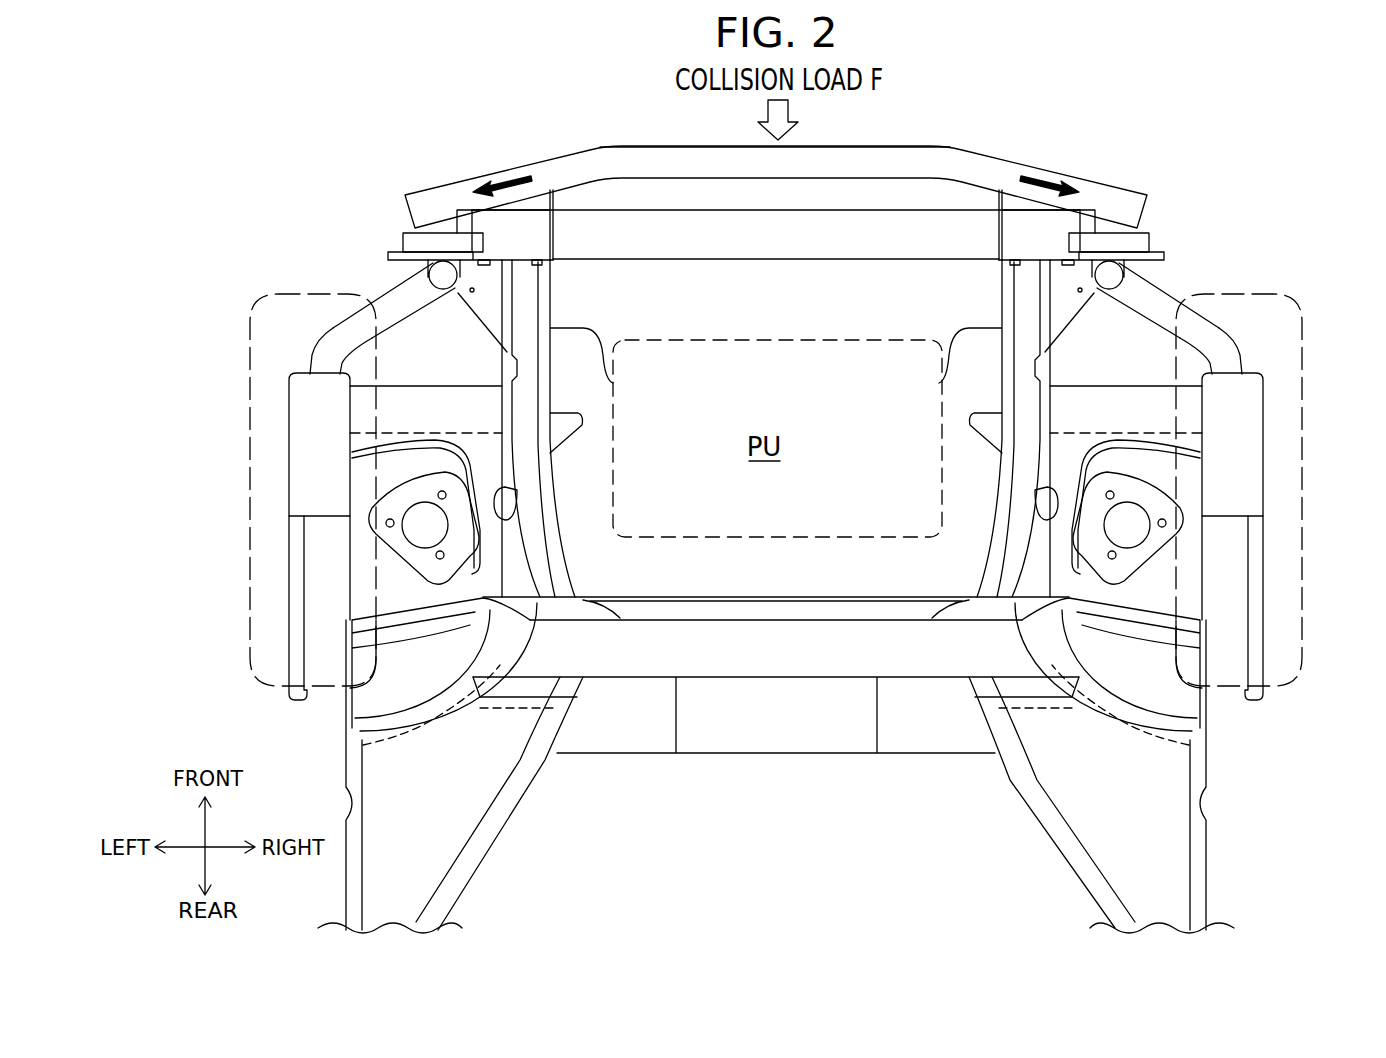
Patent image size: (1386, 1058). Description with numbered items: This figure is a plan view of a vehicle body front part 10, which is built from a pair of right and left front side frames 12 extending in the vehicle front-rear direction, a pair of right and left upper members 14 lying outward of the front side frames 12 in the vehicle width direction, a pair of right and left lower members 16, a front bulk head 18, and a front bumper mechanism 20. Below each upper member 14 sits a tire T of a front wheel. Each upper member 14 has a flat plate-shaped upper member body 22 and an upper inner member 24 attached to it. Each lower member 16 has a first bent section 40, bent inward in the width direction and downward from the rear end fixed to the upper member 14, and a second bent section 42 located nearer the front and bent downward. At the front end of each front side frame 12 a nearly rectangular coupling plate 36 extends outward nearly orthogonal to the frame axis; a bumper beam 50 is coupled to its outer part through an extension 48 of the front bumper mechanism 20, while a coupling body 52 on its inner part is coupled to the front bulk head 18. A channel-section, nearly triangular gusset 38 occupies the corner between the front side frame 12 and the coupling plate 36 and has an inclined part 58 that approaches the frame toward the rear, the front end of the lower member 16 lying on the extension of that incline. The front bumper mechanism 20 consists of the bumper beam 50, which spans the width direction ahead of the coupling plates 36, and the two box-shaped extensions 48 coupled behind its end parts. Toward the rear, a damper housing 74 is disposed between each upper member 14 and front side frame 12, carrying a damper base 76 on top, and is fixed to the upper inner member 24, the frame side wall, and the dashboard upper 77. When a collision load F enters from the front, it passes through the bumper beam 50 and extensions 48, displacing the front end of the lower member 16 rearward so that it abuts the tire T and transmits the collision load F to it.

The vehicle body front part 10 is at (1252, 180).
The front side frame 12 is at (556, 302).
The upper member 14 is at (778, 653).
The lower member 16 is at (778, 310).
The front bulk head 18 is at (800, 205).
The front bumper mechanism 20 is at (776, 143).
The upper member body 22 is at (286, 618).
The upper inner member 24 is at (289, 438).
The coupling plate 36 is at (390, 255).
The gusset 38 is at (468, 322).
The first bent section 40 is at (326, 350).
The second bent section 42 is at (440, 268).
The extension 48 is at (395, 238).
The bumper beam 50 is at (720, 140).
The coupling body 52 is at (528, 232).
The inclined part 58 is at (460, 313).
The damper housing 74 is at (500, 557).
The damper base 76 is at (363, 515).
The dashboard upper 77 is at (788, 623).
The tire T is at (250, 330).
The collision load F is at (505, 180).